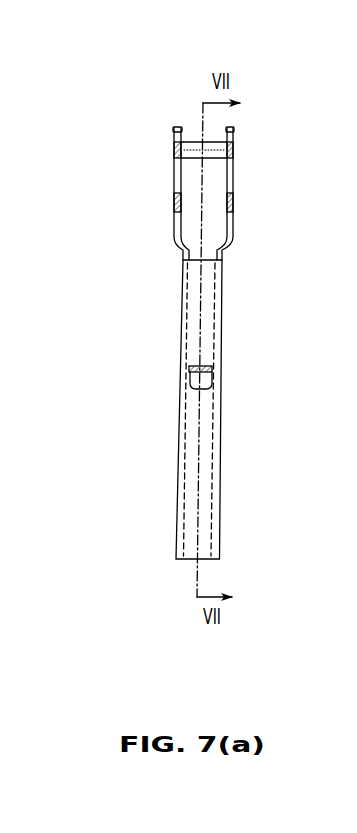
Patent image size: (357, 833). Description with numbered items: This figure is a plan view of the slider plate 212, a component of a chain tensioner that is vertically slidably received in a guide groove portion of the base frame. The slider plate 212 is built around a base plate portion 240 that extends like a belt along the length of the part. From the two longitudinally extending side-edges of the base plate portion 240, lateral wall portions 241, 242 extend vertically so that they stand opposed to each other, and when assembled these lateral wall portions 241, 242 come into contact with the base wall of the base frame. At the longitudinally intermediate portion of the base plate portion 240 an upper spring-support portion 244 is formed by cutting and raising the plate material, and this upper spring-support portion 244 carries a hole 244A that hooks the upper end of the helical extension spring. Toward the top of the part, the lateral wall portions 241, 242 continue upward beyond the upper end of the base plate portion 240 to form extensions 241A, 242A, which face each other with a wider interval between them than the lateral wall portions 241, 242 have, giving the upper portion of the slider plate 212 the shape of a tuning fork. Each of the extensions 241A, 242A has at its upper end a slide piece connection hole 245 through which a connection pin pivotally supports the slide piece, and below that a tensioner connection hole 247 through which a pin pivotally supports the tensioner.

The slider plate 212 is at (156, 61).
The base plate portion 240 is at (205, 455).
The lateral wall portion 241 is at (183, 502).
The lateral wall portion 242 is at (212, 502).
The extension 241A is at (174, 129).
The extension 242A is at (233, 127).
The slide piece connection hole 245 is at (234, 150).
The tensioner connection hole 247 is at (173, 203).
The upper spring-support portion 244 is at (212, 375).
The hole 244A is at (213, 368).